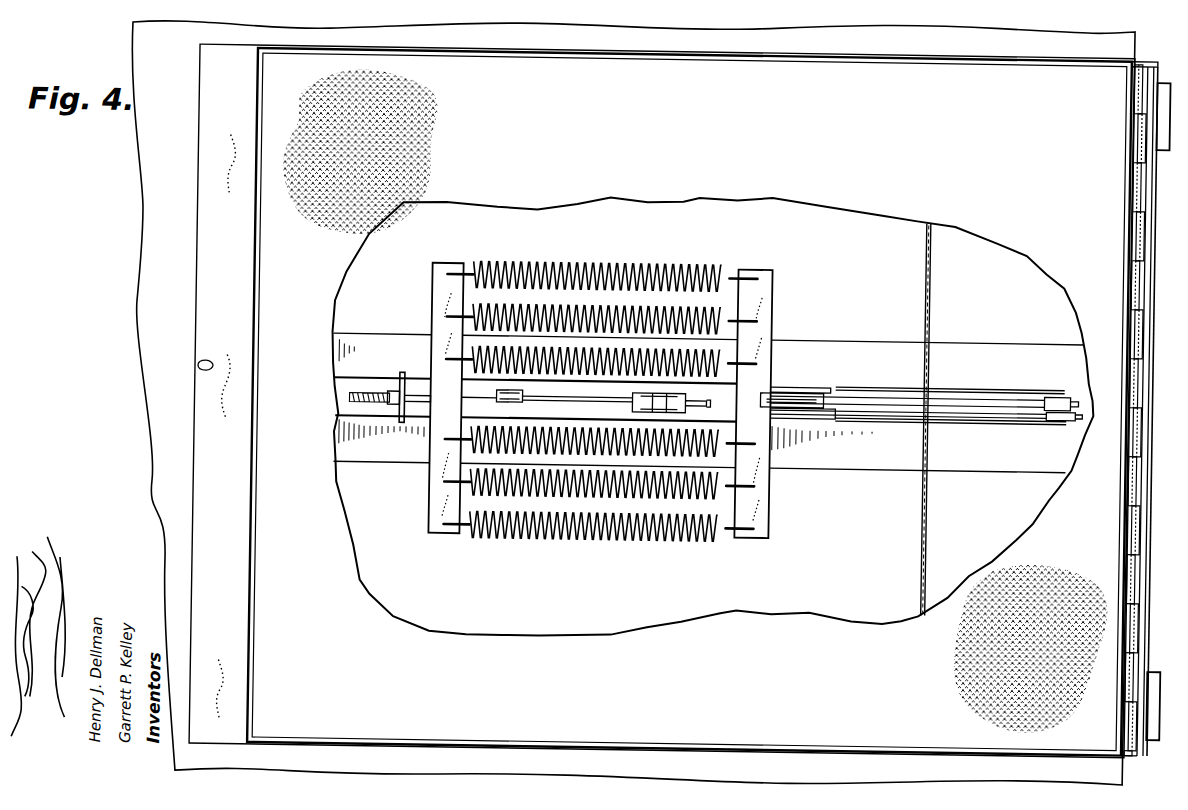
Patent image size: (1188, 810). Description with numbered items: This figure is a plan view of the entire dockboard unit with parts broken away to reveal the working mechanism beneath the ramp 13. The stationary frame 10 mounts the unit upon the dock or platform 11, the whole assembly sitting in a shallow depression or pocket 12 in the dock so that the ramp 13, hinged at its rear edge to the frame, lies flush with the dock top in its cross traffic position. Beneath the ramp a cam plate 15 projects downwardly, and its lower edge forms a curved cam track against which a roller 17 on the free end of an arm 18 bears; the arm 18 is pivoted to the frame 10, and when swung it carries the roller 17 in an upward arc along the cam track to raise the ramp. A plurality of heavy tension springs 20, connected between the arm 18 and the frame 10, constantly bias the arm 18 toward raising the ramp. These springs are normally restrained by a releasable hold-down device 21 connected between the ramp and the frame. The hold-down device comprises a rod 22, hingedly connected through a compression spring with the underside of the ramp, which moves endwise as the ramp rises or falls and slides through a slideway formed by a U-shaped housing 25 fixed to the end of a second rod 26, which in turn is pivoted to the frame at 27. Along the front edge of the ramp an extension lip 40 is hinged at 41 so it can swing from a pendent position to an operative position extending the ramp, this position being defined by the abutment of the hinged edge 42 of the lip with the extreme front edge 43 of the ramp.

The frame 10 is at (182, 306).
The dock or platform 11 is at (125, 212).
The depression or pocket 12 is at (203, 366).
The ramp 13 is at (699, 134).
The cam plate 15 is at (1006, 395).
The roller 17 is at (1055, 386).
The arm 18 is at (981, 384).
The tension springs 20 is at (594, 305).
The hold-down device 21 is at (738, 384).
The rod 22 is at (728, 405).
The housing 25 is at (646, 405).
The second rod 26 is at (585, 388).
The pivot 27 is at (510, 388).
The extension lip 40 is at (1160, 188).
The hinge 41 is at (1141, 270).
The hinged edge of the lip 42 is at (1151, 111).
The extreme front edge of the ramp 43 is at (1137, 234).